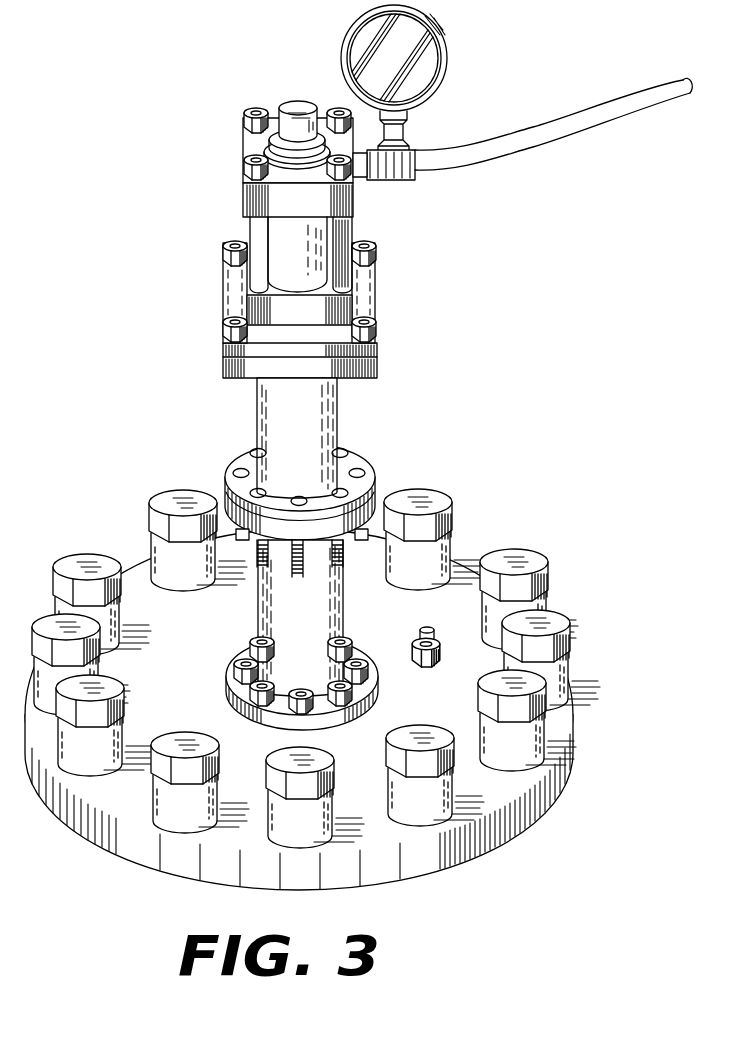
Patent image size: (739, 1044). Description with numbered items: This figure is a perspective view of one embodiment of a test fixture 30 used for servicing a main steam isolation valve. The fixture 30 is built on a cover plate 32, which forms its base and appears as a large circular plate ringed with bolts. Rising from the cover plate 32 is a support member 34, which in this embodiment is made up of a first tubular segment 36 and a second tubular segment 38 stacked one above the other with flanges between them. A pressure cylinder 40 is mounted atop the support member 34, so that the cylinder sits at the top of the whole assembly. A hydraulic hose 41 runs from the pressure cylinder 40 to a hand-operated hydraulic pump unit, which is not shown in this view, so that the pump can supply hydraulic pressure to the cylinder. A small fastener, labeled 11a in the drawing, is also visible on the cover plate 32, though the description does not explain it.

The test fixture 30 is at (86, 503).
The cover plate 32 is at (432, 696).
The support member 34 is at (548, 257).
The first tubular segment 36 is at (258, 610).
The second tubular segment 38 is at (257, 415).
The pressure cylinder 40 is at (278, 242).
The hydraulic hose 41 is at (517, 148).
The nut 11a is at (437, 645).